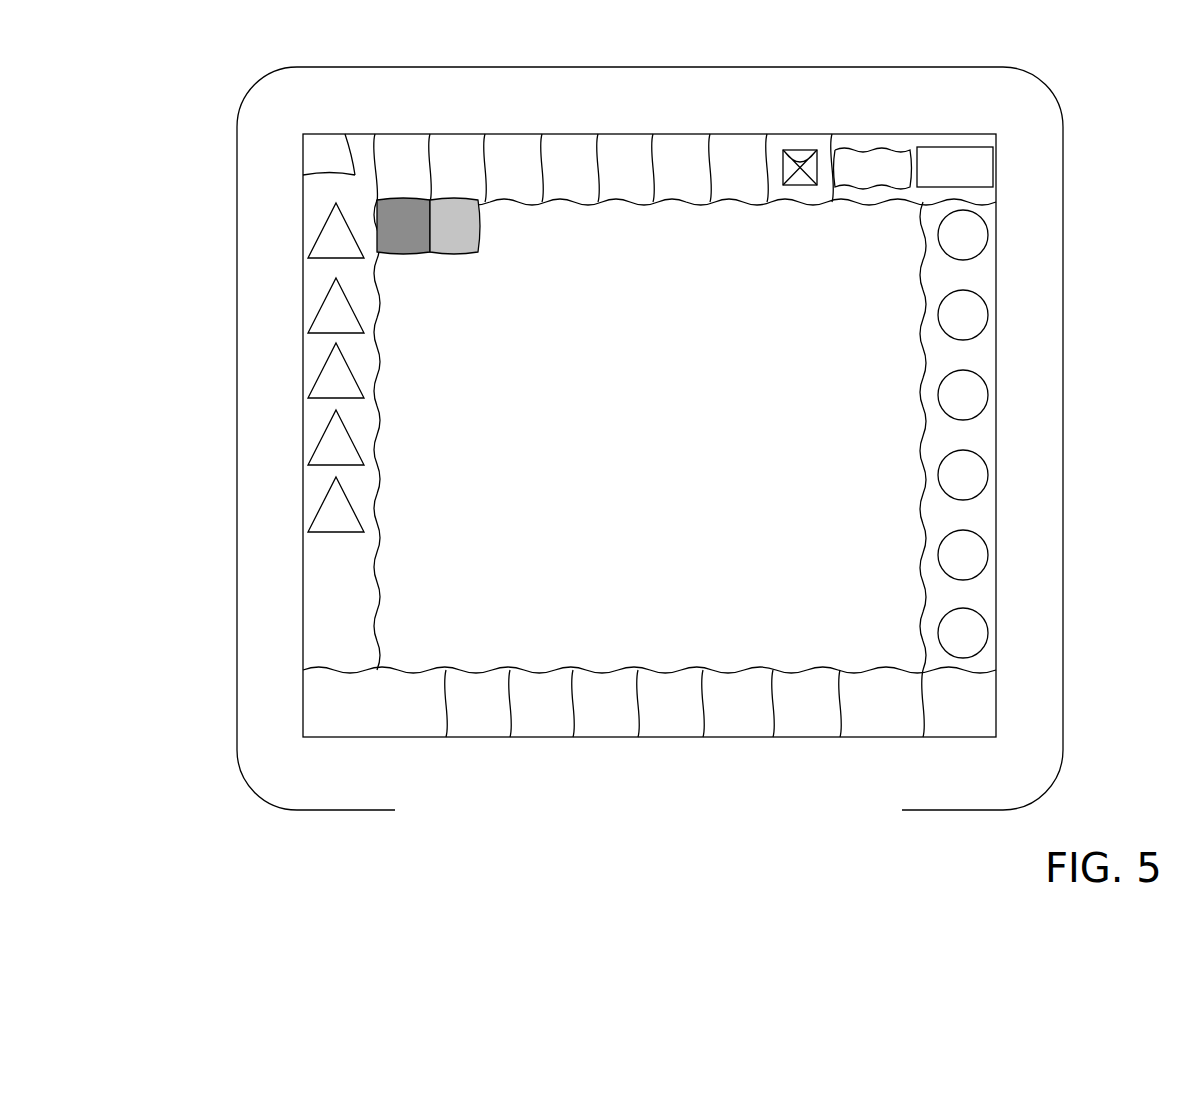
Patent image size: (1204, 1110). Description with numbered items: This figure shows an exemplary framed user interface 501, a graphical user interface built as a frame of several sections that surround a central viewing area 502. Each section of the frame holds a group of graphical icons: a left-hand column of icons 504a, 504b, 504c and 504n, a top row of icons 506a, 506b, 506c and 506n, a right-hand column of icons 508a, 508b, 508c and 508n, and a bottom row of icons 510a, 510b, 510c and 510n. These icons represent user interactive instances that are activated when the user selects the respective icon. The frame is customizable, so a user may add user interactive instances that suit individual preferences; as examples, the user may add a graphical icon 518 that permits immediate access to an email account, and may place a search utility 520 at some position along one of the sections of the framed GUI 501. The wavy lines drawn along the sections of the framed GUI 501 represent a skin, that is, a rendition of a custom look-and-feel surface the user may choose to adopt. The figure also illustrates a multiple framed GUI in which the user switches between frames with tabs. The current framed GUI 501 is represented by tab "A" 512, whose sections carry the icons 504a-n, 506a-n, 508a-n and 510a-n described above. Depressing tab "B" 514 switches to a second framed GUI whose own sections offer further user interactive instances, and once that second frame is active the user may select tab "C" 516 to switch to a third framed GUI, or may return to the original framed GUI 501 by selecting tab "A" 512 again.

The framed user interface 501 is at (1020, 203).
The viewing area 502 is at (649, 435).
The graphical icon 504a is at (318, 235).
The graphical icon 504b is at (318, 305).
The graphical icon 504c is at (320, 372).
The graphical icon 504n is at (320, 507).
The graphical icon 506a is at (398, 133).
The graphical icon 506b is at (463, 133).
The graphical icon 506c is at (517, 133).
The graphical icon 506n is at (730, 133).
The graphical icon 508a is at (988, 238).
The graphical icon 508b is at (988, 316).
The graphical icon 508c is at (988, 390).
The graphical icon 508n is at (988, 632).
The graphical icon 510a is at (345, 737).
The graphical icon 510b is at (413, 737).
The graphical icon 510c is at (473, 737).
The graphical icon 510n is at (860, 740).
The tab "A" 512 is at (345, 143).
The tab "B" 514 is at (417, 243).
The tab "C" 516 is at (462, 243).
The graphical icon 518 is at (802, 148).
The search utility 520 is at (907, 147).